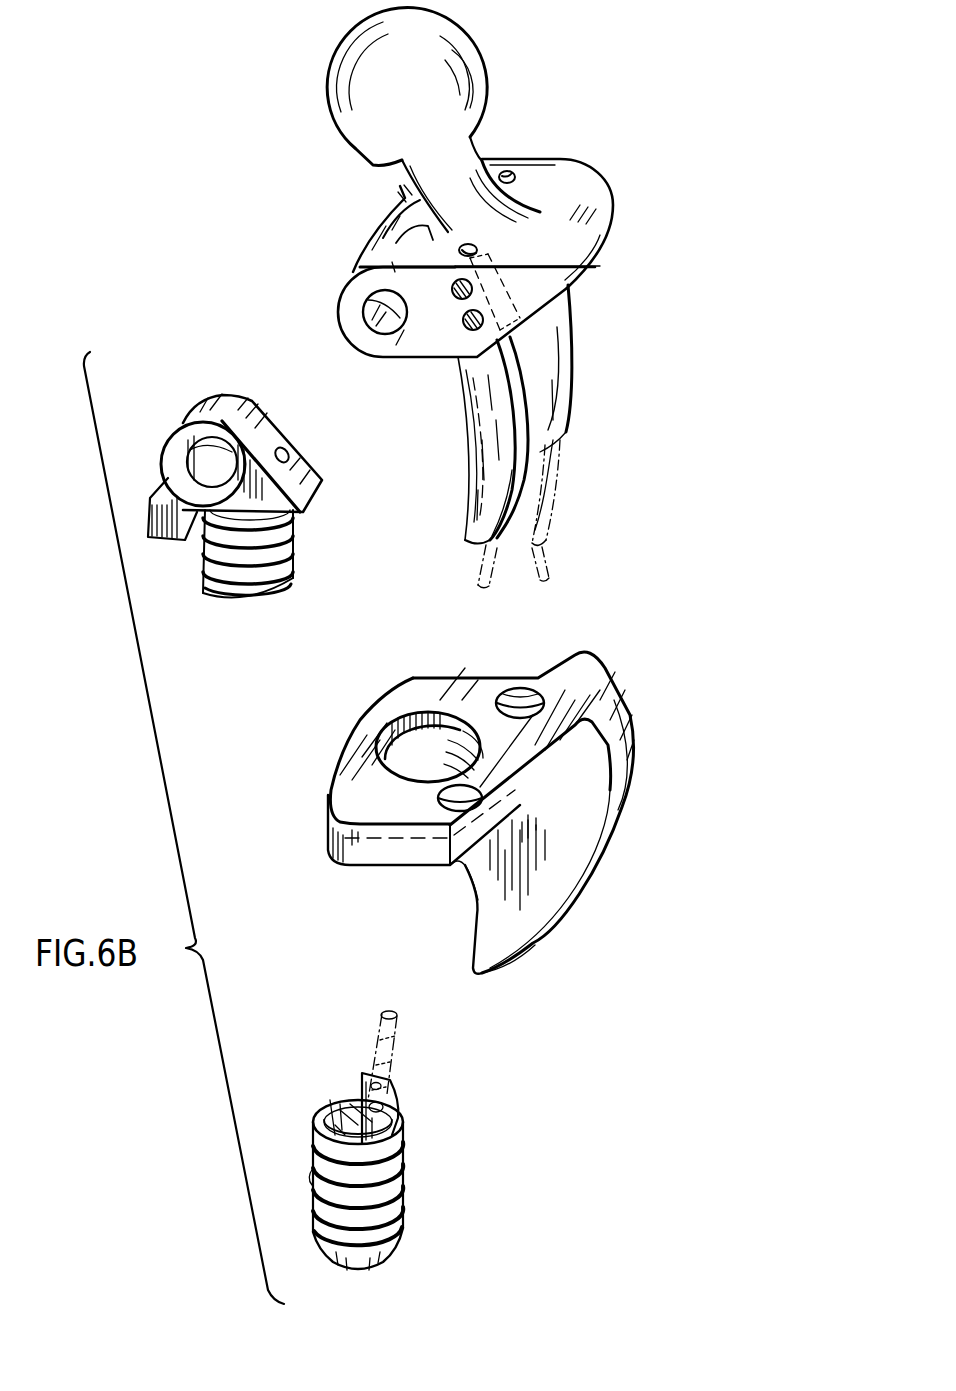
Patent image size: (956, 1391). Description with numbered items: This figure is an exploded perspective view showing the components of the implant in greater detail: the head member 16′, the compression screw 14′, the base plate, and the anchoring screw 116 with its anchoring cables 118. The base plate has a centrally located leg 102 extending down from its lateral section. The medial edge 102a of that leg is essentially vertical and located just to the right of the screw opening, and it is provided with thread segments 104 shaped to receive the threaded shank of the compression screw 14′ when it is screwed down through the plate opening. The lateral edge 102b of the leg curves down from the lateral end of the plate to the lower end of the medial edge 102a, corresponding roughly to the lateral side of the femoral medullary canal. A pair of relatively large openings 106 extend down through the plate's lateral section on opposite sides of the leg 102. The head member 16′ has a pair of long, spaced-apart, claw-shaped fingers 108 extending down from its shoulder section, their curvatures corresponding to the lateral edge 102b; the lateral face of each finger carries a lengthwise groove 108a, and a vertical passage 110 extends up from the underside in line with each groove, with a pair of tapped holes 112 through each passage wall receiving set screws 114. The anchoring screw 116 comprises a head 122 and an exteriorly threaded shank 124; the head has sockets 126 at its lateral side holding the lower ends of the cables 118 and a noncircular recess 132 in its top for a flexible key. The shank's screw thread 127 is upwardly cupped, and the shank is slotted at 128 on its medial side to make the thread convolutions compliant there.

The head member 16′ is at (534, 106).
The vertical passage 110 is at (512, 172).
The tapped holes 112 is at (452, 290).
The set screws 114 is at (462, 322).
The fingers 108 is at (550, 378).
The groove 108a is at (641, 420).
The anchoring cables 118 is at (537, 545).
The compression screw 14′ is at (318, 566).
The leg 102 is at (550, 887).
The medial edge 102a is at (465, 868).
The lateral edge 102b is at (579, 990).
The thread segments 104 is at (380, 752).
The openings 106 is at (517, 690).
The anchoring screw 116 is at (428, 1228).
The head 122 is at (402, 1124).
The shank 124 is at (383, 1230).
The sockets 126 is at (363, 1088).
The screw thread 127 is at (410, 1180).
The slot 128 is at (312, 1176).
The noncircular recess 132 is at (356, 1120).